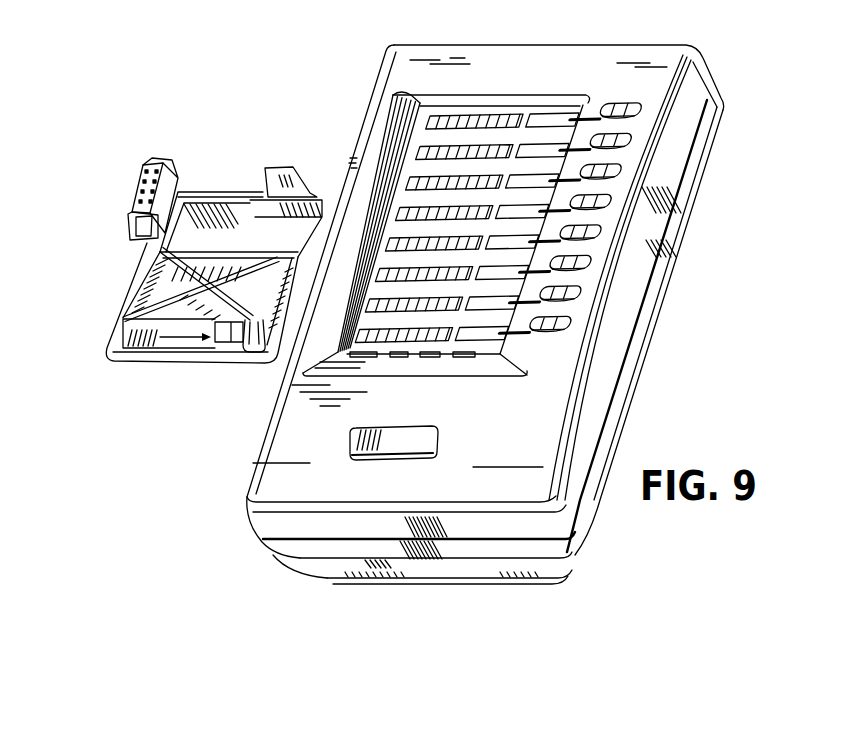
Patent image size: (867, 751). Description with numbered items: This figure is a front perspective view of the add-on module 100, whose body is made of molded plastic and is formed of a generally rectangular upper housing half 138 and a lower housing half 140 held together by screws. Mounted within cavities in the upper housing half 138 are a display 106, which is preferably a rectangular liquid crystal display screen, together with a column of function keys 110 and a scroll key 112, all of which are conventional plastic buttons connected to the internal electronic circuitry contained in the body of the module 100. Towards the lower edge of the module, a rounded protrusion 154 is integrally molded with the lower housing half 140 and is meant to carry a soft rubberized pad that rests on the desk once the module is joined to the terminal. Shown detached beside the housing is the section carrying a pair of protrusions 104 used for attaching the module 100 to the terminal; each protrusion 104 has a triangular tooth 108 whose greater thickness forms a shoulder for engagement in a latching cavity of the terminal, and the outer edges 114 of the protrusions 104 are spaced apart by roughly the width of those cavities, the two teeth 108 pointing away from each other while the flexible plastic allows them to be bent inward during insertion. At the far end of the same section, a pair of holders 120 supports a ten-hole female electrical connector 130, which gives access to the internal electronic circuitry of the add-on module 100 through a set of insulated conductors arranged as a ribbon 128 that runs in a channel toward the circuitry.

The add-on module 100 is at (318, 38).
The protrusions 104 is at (290, 150).
The display 106 is at (470, 133).
The triangular tooth 108 is at (265, 168).
The function keys 110 is at (630, 146).
The scroll key 112 is at (400, 444).
The outer edges 114 is at (306, 183).
The holders 120 is at (143, 240).
The ribbon 128 is at (200, 213).
The ten-hole female electrical connector 130 is at (167, 183).
The upper housing half 138 is at (697, 82).
The lower housing half 140 is at (703, 142).
The rounded protrusion 154 is at (572, 565).